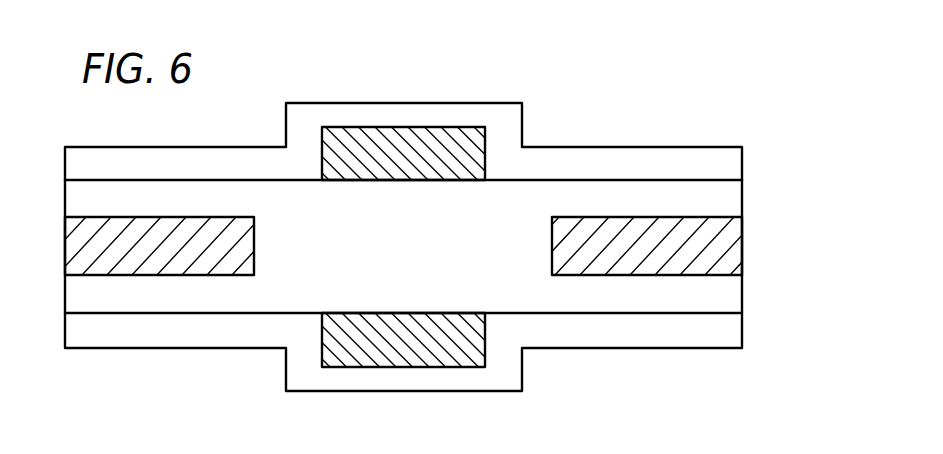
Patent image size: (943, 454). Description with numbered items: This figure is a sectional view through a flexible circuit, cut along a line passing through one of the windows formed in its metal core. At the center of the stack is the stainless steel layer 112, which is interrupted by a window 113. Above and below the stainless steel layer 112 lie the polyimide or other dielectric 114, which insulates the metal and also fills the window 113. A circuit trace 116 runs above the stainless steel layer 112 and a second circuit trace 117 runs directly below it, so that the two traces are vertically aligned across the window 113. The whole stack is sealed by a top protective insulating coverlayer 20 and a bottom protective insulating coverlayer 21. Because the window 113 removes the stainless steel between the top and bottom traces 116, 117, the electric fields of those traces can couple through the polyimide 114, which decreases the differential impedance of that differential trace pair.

The top protective insulating coverlayer 20 is at (668, 147).
The bottom protective insulating coverlayer 21 is at (618, 348).
The stainless steel layer 112 is at (732, 248).
The window 113 is at (357, 252).
The polyimide dielectric 114 is at (727, 202).
The top circuit trace 116 is at (438, 127).
The bottom circuit trace 117 is at (360, 367).